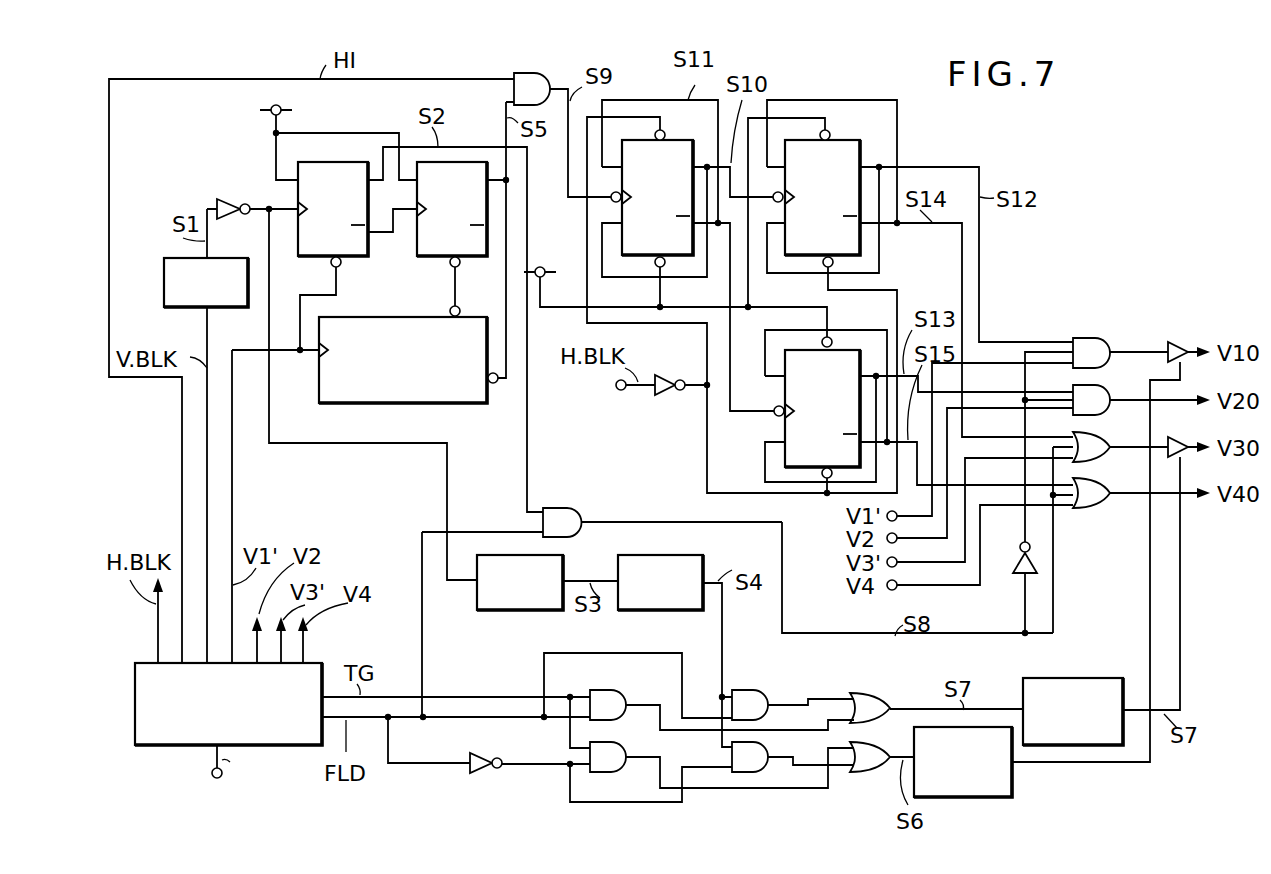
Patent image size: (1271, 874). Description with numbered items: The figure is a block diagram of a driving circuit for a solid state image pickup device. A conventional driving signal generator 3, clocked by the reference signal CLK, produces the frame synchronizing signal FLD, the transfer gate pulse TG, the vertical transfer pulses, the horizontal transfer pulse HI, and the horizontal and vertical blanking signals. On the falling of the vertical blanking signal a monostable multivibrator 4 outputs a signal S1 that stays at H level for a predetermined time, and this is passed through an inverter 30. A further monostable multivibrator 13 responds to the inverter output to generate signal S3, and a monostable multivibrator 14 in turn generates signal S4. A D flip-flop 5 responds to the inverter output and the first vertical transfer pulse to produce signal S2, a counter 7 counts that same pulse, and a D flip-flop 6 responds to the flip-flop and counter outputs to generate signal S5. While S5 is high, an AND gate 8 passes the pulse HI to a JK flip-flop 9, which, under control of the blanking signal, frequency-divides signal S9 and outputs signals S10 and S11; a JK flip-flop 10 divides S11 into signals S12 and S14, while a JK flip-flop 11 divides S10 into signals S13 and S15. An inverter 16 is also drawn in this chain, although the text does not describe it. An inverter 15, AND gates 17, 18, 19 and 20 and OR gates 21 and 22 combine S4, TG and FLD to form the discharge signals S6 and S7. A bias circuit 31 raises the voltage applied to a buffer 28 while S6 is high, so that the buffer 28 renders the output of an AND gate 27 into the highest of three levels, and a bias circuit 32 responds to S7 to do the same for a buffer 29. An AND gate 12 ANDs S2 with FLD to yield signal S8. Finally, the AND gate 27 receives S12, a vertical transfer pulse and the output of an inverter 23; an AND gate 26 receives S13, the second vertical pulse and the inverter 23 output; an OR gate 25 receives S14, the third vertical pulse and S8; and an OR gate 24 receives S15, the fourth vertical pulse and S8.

The driving signal generator 3 is at (180, 740).
The monostable multivibrator 4 is at (168, 258).
The D flip-flop 5 is at (318, 159).
The D flip-flop 6 is at (432, 258).
The counter 7 is at (450, 398).
The AND gate 8 is at (547, 74).
The JK flip-flop 9 is at (679, 143).
The JK flip-flop 10 is at (838, 143).
The JK flip-flop 11 is at (845, 340).
The AND gate 12 is at (562, 506).
The monostable multivibrator 13 is at (564, 569).
The monostable multivibrator 14 is at (700, 554).
The inverter 15 is at (480, 775).
The inverter 16 is at (665, 397).
The AND gate 17 is at (610, 692).
The AND gate 18 is at (610, 768).
The AND gate 19 is at (752, 771).
The AND gate 20 is at (752, 692).
The OR gate 21 is at (884, 684).
The OR gate 22 is at (872, 775).
The inverter 23 is at (1015, 572).
The OR gate 24 is at (1105, 506).
The OR gate 25 is at (1105, 460).
The AND gate 26 is at (1106, 412).
The AND gate 27 is at (1106, 366).
The buffer 28 is at (1178, 340).
The buffer 29 is at (1183, 429).
The inverter 30 is at (228, 198).
The bias circuit 31 is at (990, 792).
The bias circuit 32 is at (1054, 680).